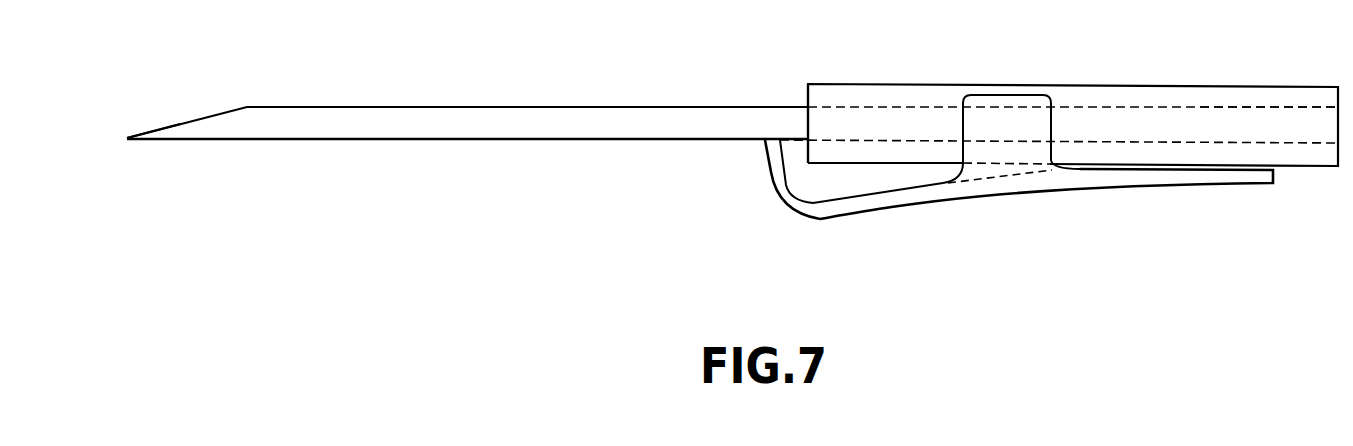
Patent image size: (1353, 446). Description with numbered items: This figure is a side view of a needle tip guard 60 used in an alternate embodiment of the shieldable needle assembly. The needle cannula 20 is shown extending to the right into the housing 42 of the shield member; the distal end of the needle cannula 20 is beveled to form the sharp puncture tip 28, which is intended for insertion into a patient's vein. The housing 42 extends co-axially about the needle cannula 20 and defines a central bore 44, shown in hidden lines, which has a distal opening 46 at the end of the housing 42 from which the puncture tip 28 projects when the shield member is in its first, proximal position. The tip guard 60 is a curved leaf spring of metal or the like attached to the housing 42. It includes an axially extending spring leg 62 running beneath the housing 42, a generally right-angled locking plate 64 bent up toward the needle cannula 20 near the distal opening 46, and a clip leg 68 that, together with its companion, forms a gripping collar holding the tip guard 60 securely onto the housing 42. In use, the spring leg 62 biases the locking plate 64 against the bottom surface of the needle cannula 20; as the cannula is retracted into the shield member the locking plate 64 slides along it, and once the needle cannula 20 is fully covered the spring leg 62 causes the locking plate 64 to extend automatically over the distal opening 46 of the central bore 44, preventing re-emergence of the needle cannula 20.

The needle cannula 20 is at (438, 122).
The puncture tip 28 is at (127, 138).
The housing 42 is at (1167, 85).
The central bore 44 is at (1253, 107).
The distal opening 46 is at (806, 99).
The needle tip guard 60 is at (996, 171).
The spring leg 62 is at (1163, 184).
The locking plate 64 is at (765, 162).
The clip leg 68 is at (1025, 120).